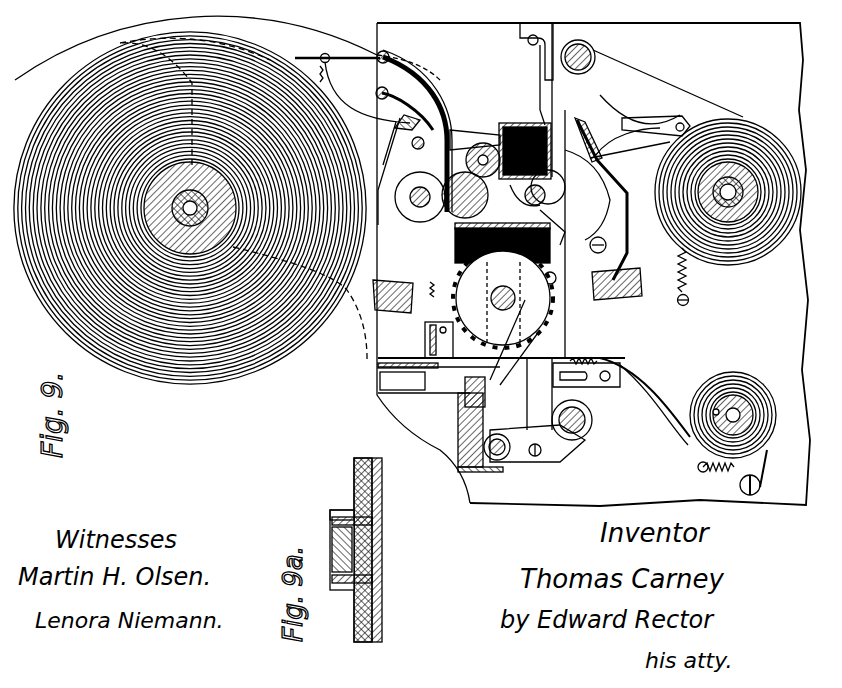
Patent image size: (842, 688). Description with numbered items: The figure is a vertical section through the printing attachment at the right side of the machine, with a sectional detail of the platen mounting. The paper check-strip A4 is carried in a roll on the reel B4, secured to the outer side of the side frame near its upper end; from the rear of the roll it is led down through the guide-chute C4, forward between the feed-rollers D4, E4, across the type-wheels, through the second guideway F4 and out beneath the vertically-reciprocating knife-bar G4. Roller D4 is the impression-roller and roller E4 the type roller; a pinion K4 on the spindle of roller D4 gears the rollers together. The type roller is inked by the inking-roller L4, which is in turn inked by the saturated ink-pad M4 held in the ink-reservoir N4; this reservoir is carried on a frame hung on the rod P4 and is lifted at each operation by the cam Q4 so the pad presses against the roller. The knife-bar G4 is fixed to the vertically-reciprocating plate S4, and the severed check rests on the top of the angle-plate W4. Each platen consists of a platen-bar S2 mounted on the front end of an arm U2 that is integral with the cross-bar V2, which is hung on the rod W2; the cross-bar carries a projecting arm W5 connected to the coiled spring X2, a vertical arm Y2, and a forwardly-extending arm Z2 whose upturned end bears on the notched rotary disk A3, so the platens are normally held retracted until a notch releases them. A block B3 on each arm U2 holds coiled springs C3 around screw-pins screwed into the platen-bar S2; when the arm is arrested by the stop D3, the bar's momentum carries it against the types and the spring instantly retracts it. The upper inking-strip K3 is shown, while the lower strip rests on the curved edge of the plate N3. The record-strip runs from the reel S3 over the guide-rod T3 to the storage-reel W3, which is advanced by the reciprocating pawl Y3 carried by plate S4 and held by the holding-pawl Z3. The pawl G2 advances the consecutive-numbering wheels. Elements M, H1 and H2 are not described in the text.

In FIG. 9, the paper check-strip A4 is at (192, 388).
In FIG. 9, the reel B4 is at (222, 186).
In FIG. 9, the block B3 is at (640, 285).
In FIG. 9A, the block B3 is at (330, 548).
In FIG. 9, the coiled spring X2 is at (305, 56).
In FIG. 9, the guide-chute C4 is at (416, 70).
In FIG. 9, the rod P4 is at (528, 40).
In FIG. 9, the cam Q4 is at (560, 124).
In FIG. 9, the guide-rod T3 is at (595, 52).
In FIG. 9, the projecting arm W5 is at (507, 110).
In FIG. 9, the cross-bar V2 is at (528, 113).
In FIG. 9, the feed-roller D4 is at (381, 171).
In FIG. 9, the rod W2 is at (417, 135).
In FIG. 9, the arm U2 is at (517, 199).
In FIG. 9A, the arm U2 is at (352, 510).
In FIG. 9, the pinion K4 is at (465, 198).
In FIG. 9, the inking-roller L4 is at (482, 143).
In FIG. 9, the ink-pad M4 is at (510, 125).
In FIG. 9, the ink-reservoir N4 is at (486, 119).
In FIG. 9, the vertical arm Y2 is at (527, 120).
In FIG. 9, the shaft M is at (540, 191).
In FIG. 9, the forwardly-extending arm Z2 is at (591, 195).
In FIG. 9, the rotary disk A3 is at (558, 227).
In FIG. 9, the stop D3 is at (602, 251).
In FIG. 9, the platen-bar S2 is at (495, 285).
In FIG. 9A, the platen-bar S2 is at (352, 588).
In FIG. 9, the plate N3 is at (487, 260).
In FIG. 9, the feed-roller E4 is at (503, 298).
In FIG. 9, the inking-strip K3 is at (543, 332).
In FIG. 9, the knife-bar G4 is at (392, 355).
In FIG. 9, the guideway F4 is at (430, 330).
In FIG. 9, the vertically-reciprocating plate S4 is at (586, 373).
In FIG. 9, the angle-plate W4 is at (458, 435).
In FIG. 9, the pawl G2 is at (534, 410).
In FIG. 9, the pivot H1 is at (578, 435).
In FIG. 9, the pivot H2 is at (540, 452).
In FIG. 9, the reciprocating pawl Y3 is at (650, 420).
In FIG. 9, the reel S3 is at (712, 192).
In FIG. 9, the storage-reel W3 is at (722, 400).
In FIG. 9, the holding-pawl Z3 is at (762, 468).
In FIG. 9A, the coiled spring C3 is at (342, 514).